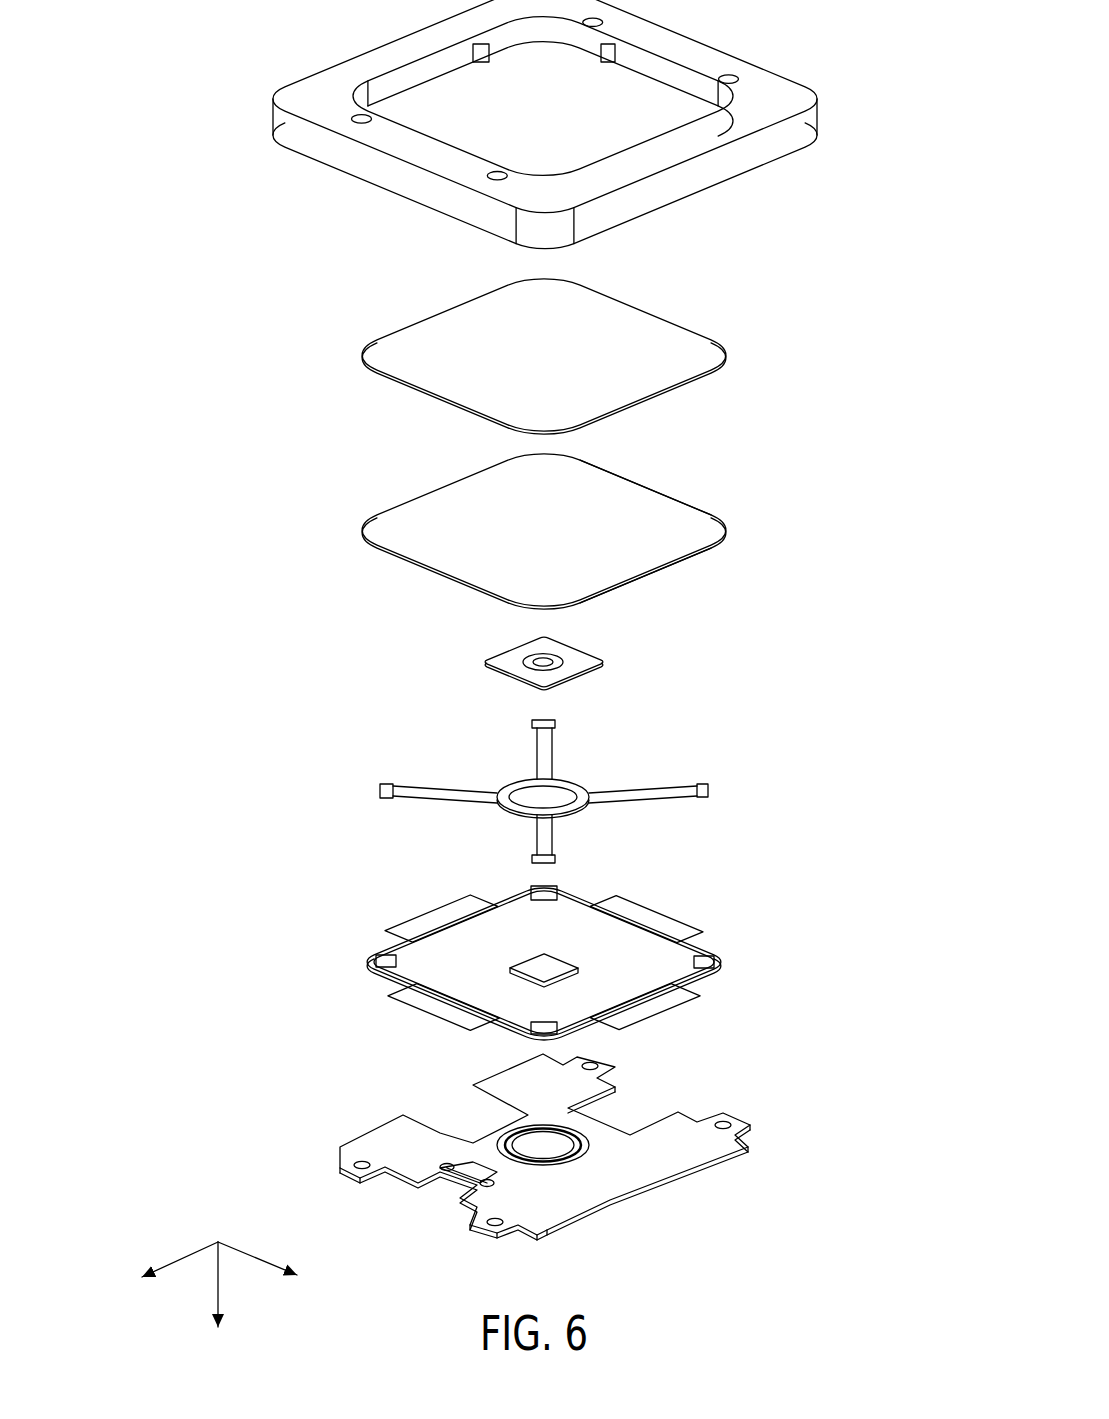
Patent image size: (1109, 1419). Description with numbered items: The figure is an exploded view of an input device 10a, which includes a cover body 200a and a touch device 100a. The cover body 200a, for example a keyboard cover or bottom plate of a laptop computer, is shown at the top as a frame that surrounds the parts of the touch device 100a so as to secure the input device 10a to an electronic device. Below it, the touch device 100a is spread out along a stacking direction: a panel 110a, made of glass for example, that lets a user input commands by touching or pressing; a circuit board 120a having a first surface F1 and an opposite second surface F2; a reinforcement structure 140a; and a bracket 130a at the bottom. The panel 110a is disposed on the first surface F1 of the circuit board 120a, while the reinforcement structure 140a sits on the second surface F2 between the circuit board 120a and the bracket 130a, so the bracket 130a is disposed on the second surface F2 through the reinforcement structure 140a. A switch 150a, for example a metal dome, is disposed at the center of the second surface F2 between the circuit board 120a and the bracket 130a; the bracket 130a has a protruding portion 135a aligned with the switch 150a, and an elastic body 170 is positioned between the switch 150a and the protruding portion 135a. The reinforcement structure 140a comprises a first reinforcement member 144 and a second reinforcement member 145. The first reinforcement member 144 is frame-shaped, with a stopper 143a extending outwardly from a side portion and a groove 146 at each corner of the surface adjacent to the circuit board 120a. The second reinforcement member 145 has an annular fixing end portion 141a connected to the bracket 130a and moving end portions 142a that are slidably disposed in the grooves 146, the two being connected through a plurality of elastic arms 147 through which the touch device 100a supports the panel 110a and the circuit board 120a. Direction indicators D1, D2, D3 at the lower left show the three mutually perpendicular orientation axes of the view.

The input device 10a is at (572, 639).
The cover body 200a is at (676, 50).
The touch device 100a is at (268, 275).
The panel 110a is at (623, 333).
The circuit board 120a is at (602, 534).
The first surface F1 is at (603, 505).
The second surface F2 is at (650, 572).
The switch 150a is at (573, 672).
The reinforcement structure 140a is at (881, 758).
The second reinforcement member 145 is at (823, 715).
The fixing end portion 141a is at (580, 788).
The moving end portion 142a is at (705, 786).
The elastic arms 147 is at (545, 843).
The first reinforcement member 144 is at (577, 961).
The groove 146 is at (383, 958).
The stopper 143a is at (425, 1002).
The elastic body 170 is at (555, 970).
The bracket 130a is at (552, 1155).
The protruding portion 135a is at (553, 1147).
The first direction D1 is at (218, 1300).
The second direction D2 is at (275, 1268).
The third direction D3 is at (163, 1268).